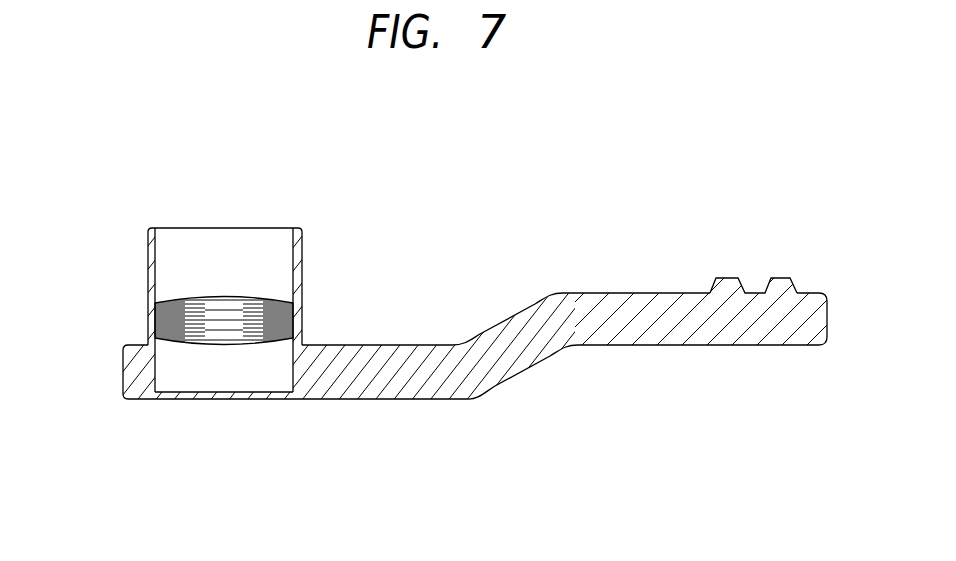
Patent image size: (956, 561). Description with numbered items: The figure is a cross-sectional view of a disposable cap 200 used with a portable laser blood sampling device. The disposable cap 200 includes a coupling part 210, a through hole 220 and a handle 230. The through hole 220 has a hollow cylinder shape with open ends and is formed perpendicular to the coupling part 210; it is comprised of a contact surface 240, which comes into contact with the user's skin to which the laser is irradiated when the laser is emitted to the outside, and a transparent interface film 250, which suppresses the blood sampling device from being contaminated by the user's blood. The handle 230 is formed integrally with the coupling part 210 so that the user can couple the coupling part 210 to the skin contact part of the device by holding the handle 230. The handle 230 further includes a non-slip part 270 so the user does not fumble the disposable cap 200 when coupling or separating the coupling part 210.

The disposable cap 200 is at (418, 114).
The coupling part 210 is at (140, 357).
The through hole 220 is at (267, 262).
The handle 230 is at (540, 318).
The contact surface 240 is at (200, 228).
The transparent interface film 250 is at (283, 397).
The non-slip part 270 is at (778, 285).